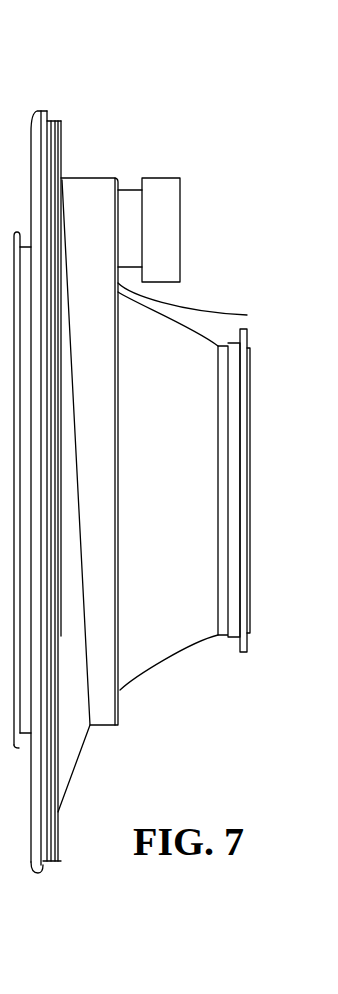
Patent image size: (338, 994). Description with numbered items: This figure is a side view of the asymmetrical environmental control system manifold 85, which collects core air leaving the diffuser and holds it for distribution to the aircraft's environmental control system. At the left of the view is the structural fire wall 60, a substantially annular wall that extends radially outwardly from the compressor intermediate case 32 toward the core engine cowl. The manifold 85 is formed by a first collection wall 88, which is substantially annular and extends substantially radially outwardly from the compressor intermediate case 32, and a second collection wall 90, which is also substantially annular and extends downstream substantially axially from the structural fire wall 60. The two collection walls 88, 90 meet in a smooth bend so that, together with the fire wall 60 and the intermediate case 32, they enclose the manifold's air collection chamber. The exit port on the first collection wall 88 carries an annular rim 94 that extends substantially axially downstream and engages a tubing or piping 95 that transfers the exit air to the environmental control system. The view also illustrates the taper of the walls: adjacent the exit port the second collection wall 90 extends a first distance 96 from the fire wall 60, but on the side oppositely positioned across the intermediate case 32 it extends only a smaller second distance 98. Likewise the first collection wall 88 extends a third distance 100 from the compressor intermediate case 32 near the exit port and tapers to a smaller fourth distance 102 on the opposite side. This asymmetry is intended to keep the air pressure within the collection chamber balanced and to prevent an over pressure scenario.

The compressor intermediate case 32 is at (197, 638).
The structural fire wall 60 is at (67, 766).
The environmental control system manifold 85 is at (115, 176).
The first collection wall 88 is at (199, 314).
The second collection wall 90 is at (145, 158).
The annular rim 94 is at (130, 188).
The tubing or piping 95 is at (163, 203).
The first distance 96 is at (119, 178).
The second distance 98 is at (89, 730).
The third distance 100 is at (120, 292).
The fourth distance 102 is at (120, 690).